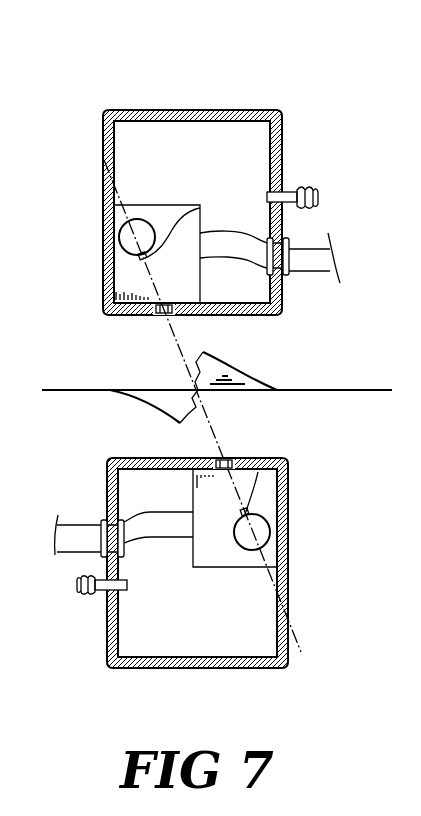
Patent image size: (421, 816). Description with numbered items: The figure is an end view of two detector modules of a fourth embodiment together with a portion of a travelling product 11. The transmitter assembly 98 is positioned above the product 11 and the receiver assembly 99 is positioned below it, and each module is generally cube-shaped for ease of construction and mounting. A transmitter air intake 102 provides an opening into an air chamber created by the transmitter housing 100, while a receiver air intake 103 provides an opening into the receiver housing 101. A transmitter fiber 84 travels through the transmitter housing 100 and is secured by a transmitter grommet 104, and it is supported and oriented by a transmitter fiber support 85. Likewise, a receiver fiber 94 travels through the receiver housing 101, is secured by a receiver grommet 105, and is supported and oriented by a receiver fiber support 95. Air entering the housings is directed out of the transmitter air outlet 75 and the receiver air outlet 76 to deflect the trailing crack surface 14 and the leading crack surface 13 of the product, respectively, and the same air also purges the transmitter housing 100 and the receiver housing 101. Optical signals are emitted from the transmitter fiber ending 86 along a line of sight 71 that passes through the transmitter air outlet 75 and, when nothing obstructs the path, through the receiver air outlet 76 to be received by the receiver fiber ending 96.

The transmitter assembly 98 is at (148, 68).
The receiver assembly 99 is at (311, 667).
The transmitter housing 100 is at (283, 118).
The receiver housing 101 is at (174, 668).
The transmitter fiber support 85 is at (171, 216).
The receiver fiber support 95 is at (273, 480).
The transmitter fiber ending 86 is at (132, 256).
The receiver fiber 94 is at (266, 534).
The transmitter fiber 84 is at (190, 213).
The transmitter grommet 104 is at (292, 240).
The receiver grommet 105 is at (102, 522).
The transmitter air intake 102 is at (318, 205).
The receiver air intake 103 is at (94, 596).
The transmitter air outlet 75 is at (158, 316).
The receiver air outlet 76 is at (232, 458).
The line of sight 71 is at (175, 347).
The travelling product 11 is at (337, 390).
The leading crack surface 13 is at (215, 358).
The trailing crack surface 14 is at (160, 417).
The receiver fiber ending 96 is at (284, 460).